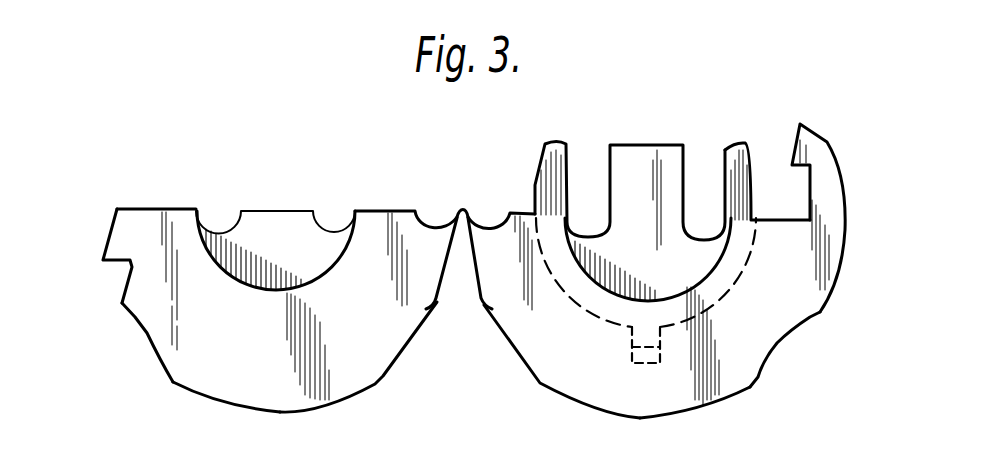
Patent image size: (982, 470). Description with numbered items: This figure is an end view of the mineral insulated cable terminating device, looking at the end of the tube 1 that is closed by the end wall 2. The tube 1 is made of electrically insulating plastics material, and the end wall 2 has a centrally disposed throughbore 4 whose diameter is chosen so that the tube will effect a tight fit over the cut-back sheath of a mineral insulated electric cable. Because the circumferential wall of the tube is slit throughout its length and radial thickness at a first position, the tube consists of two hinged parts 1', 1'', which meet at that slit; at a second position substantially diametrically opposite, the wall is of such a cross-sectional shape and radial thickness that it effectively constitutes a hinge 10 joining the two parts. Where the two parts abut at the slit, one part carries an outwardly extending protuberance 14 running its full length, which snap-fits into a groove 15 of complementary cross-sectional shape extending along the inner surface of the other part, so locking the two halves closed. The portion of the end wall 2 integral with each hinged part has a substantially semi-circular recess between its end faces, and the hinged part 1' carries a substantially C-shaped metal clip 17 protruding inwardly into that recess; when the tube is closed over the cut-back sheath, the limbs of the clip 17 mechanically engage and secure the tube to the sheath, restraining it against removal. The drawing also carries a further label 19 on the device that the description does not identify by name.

The tube 1 is at (226, 425).
The hinged part 1' is at (695, 424).
The hinged part 1'' is at (130, 348).
The end wall 2 is at (385, 334).
The throughbore 4 is at (320, 280).
The hinge 10 is at (460, 208).
The protuberance 14 is at (122, 238).
The groove 15 is at (816, 178).
The metal clip 17 is at (757, 143).
The post 19 is at (642, 156).